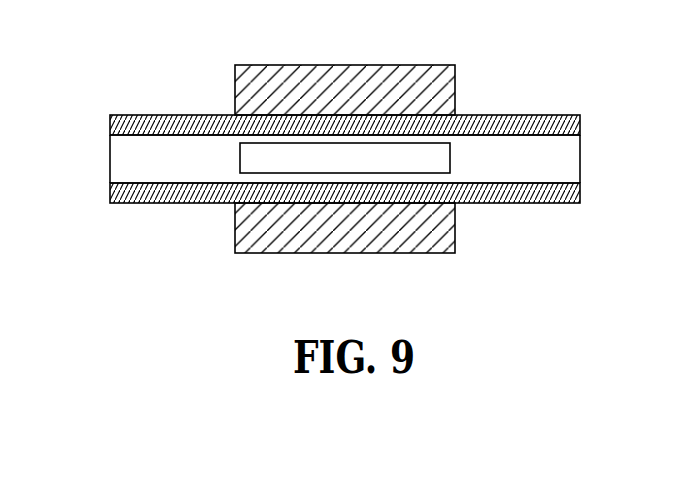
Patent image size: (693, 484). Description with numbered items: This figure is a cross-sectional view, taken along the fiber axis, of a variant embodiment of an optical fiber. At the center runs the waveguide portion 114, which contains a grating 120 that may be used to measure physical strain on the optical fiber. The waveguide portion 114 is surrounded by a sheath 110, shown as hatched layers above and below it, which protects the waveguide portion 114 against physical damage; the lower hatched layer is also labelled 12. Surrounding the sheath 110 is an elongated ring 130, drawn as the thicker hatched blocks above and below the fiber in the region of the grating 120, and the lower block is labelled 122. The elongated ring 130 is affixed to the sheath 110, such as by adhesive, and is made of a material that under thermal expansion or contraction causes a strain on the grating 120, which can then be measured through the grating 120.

The sheath 110 is at (377, 159).
The waveguide portion 114 is at (565, 161).
The cladding 12 is at (585, 197).
The grating 120 is at (413, 155).
The elongated ring 130 is at (306, 90).
The lower block 122 is at (340, 237).